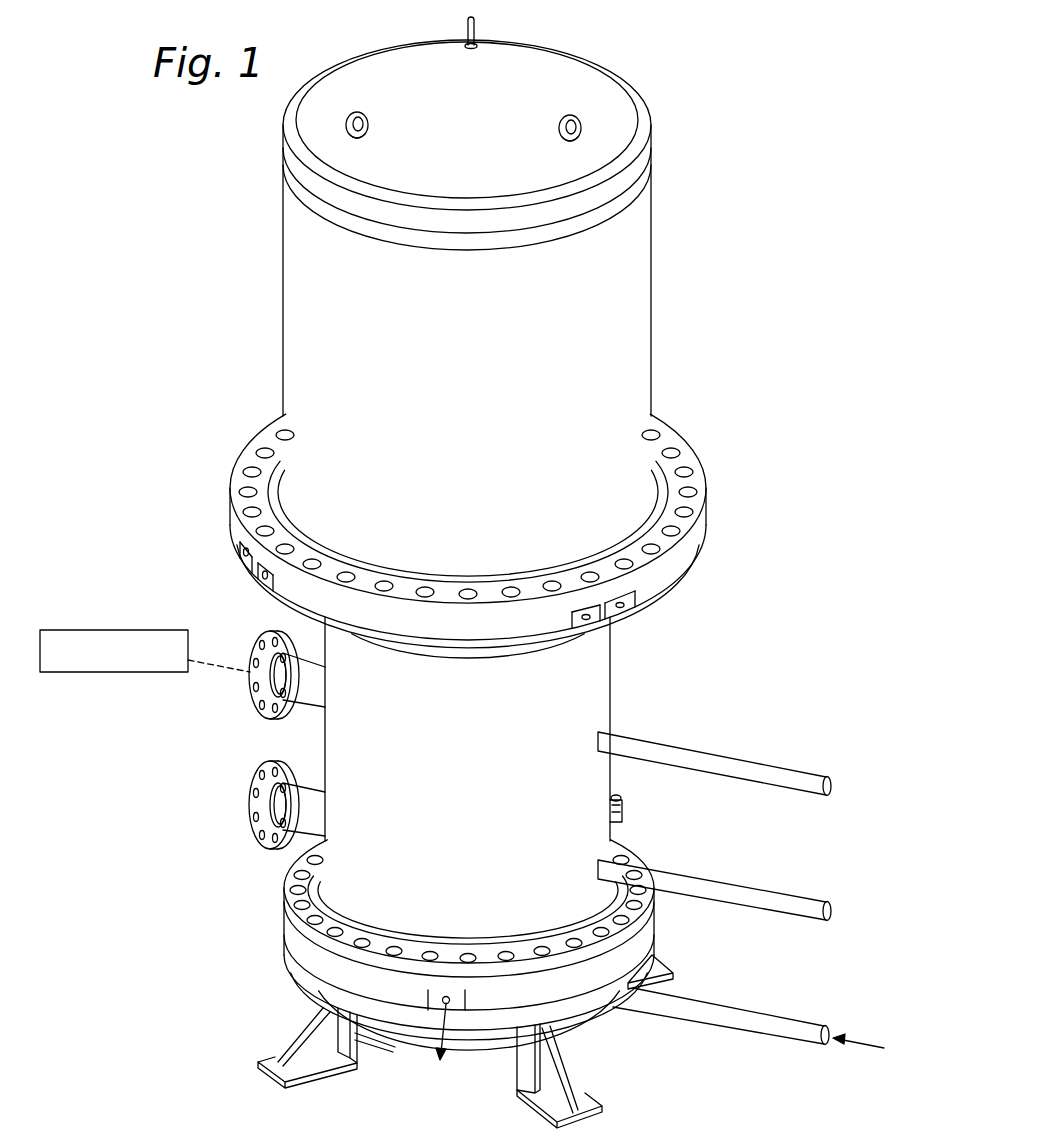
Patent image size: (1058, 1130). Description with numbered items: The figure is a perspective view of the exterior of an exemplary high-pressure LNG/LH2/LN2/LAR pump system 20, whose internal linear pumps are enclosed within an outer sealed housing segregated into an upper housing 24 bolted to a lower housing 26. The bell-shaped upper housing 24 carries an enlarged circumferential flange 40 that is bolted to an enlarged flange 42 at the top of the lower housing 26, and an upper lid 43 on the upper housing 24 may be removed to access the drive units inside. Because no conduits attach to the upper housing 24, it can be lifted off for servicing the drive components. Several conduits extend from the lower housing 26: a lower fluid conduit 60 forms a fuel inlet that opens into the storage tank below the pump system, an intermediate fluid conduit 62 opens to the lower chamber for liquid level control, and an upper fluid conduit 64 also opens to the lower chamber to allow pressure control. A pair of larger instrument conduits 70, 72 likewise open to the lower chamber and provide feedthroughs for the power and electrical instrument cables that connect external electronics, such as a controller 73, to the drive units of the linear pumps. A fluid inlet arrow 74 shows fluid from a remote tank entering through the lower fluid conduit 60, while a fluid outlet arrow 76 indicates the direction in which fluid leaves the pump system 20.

The high-pressure pump system 20 is at (703, 146).
The upper housing 24 is at (482, 397).
The lower housing 26 is at (482, 805).
The circumferential flange 40 is at (690, 466).
The flange 42 is at (688, 578).
The upper lid 43 is at (392, 73).
The lower fluid conduit 60 is at (735, 1017).
The intermediate fluid conduit 62 is at (728, 890).
The upper fluid conduit 64 is at (738, 762).
The instrument conduit 70 is at (260, 708).
The instrument conduit 72 is at (260, 836).
The controller 73 is at (127, 630).
The fluid inlet arrow 74 is at (864, 1045).
The fluid outlet arrow 76 is at (437, 1013).